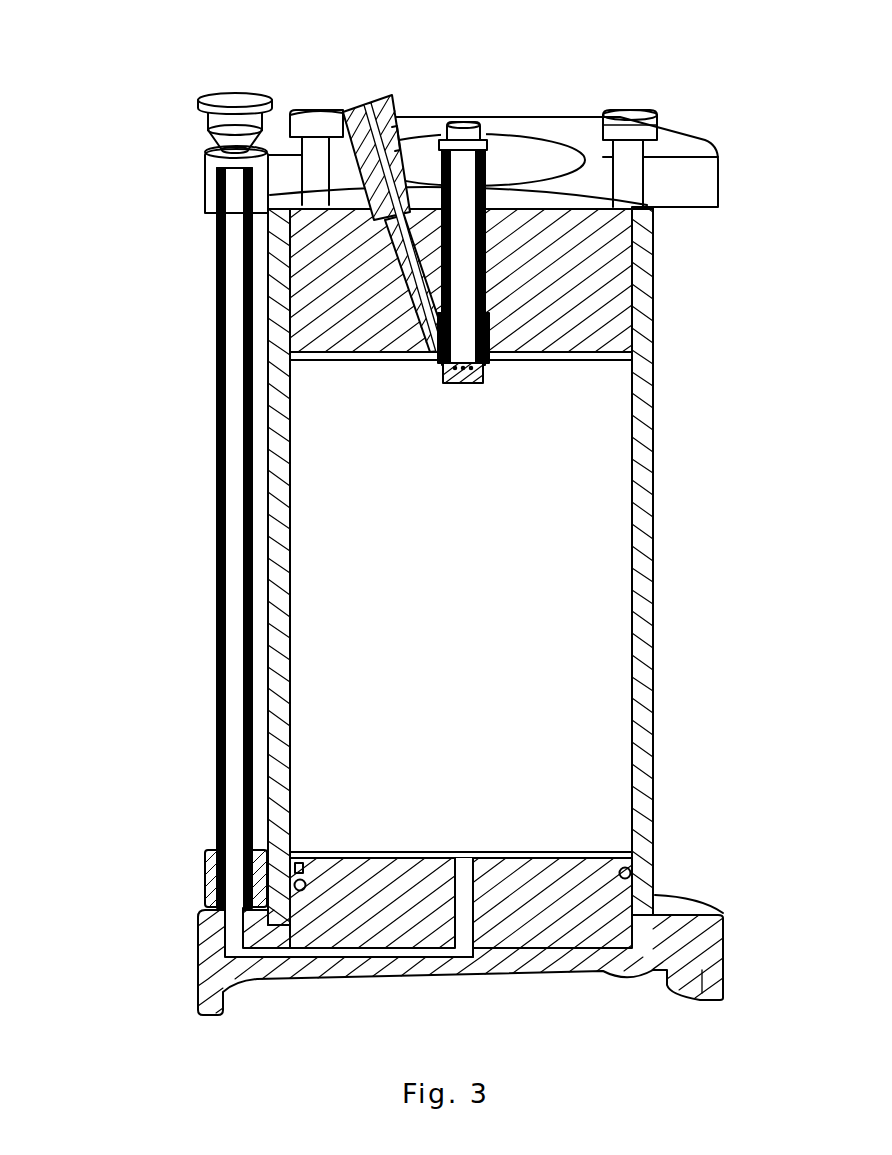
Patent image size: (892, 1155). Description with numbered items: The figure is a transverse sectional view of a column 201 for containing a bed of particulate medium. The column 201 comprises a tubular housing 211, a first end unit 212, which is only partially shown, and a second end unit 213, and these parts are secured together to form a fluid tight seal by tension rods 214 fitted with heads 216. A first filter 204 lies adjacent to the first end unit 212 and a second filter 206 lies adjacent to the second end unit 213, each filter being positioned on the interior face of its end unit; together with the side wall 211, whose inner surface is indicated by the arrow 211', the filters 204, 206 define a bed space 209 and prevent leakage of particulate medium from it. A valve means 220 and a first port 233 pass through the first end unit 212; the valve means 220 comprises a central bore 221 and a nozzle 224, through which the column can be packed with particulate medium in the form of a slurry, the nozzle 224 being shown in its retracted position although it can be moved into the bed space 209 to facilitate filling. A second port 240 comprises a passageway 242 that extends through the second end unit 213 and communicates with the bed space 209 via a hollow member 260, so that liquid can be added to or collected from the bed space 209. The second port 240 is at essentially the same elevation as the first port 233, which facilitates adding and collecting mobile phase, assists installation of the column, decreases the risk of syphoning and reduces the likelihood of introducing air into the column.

The column 201 is at (176, 498).
The first filter 204 is at (565, 360).
The second filter 206 is at (612, 852).
The bed space 209 is at (490, 560).
The tubular housing 211 is at (511, 566).
The wall direction arrow 211' is at (376, 645).
The first end unit 212 is at (612, 288).
The second end unit 213 is at (688, 930).
The tension rods 214 is at (310, 147).
The heads 216 is at (632, 115).
The valve means 220 is at (462, 128).
The central bore 221 is at (468, 172).
The nozzle 224 is at (465, 385).
The first port 233 is at (368, 95).
The second port 240 is at (233, 94).
The passageway 242 is at (470, 943).
The hollow member 260 is at (220, 765).